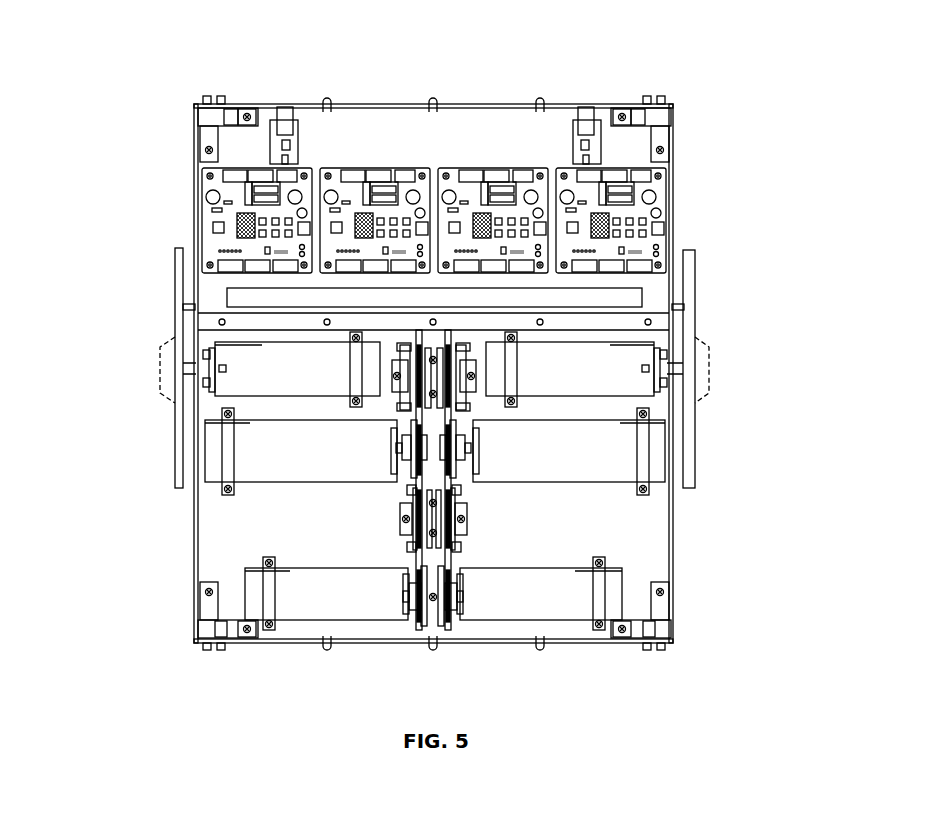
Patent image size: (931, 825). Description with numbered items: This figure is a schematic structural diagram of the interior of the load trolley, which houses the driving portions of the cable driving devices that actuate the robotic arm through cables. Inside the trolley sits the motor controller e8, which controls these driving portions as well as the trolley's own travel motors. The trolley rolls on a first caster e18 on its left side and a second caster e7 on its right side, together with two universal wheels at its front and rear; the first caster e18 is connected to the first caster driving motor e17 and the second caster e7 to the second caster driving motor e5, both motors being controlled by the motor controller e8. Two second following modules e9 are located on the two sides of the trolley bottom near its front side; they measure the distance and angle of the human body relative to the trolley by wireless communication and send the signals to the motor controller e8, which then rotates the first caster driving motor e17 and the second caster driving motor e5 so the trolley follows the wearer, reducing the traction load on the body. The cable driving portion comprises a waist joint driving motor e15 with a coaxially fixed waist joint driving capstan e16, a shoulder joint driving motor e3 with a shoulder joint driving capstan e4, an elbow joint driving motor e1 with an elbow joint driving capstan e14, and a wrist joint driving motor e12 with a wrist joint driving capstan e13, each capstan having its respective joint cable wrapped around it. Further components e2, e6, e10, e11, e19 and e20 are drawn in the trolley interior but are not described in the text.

The elbow joint driving motor e1 is at (550, 595).
The lower central bearing block e2 is at (470, 513).
The shoulder joint driving motor e3 is at (523, 472).
The shoulder joint driving capstan e4 is at (473, 435).
The second caster driving motor e5 is at (560, 385).
The upper right motor connector e6 is at (655, 350).
The second caster e7 is at (683, 311).
The motor controller e8 is at (300, 183).
The second following modules e9 is at (580, 110).
The bracket screws e10 is at (612, 116).
The bottom frame member e11 is at (293, 640).
The wrist joint driving motor e12 is at (413, 632).
The wrist joint driving capstan e13 is at (313, 593).
The elbow joint driving capstan e14 is at (407, 573).
The waist joint driving motor e15 is at (285, 463).
The waist joint driving capstan e16 is at (393, 432).
The first caster driving motor e17 is at (263, 372).
The first caster e18 is at (175, 318).
The corner bracket e19 is at (247, 148).
The left frame member e20 is at (196, 128).